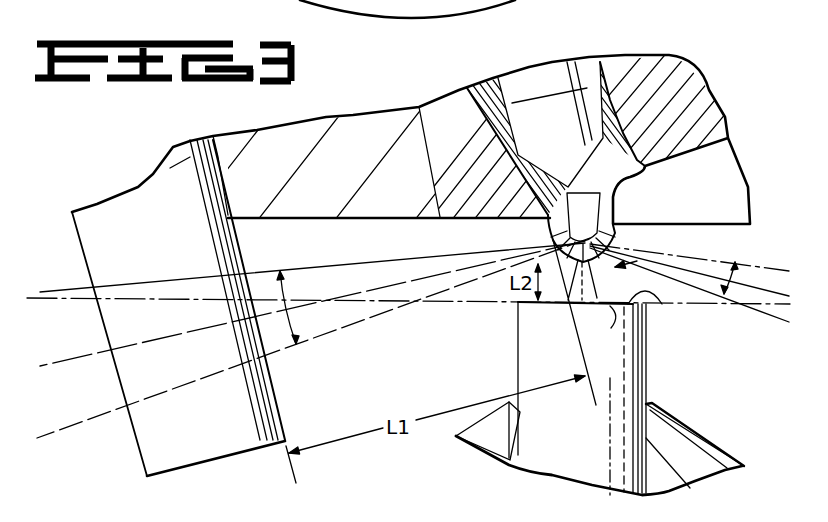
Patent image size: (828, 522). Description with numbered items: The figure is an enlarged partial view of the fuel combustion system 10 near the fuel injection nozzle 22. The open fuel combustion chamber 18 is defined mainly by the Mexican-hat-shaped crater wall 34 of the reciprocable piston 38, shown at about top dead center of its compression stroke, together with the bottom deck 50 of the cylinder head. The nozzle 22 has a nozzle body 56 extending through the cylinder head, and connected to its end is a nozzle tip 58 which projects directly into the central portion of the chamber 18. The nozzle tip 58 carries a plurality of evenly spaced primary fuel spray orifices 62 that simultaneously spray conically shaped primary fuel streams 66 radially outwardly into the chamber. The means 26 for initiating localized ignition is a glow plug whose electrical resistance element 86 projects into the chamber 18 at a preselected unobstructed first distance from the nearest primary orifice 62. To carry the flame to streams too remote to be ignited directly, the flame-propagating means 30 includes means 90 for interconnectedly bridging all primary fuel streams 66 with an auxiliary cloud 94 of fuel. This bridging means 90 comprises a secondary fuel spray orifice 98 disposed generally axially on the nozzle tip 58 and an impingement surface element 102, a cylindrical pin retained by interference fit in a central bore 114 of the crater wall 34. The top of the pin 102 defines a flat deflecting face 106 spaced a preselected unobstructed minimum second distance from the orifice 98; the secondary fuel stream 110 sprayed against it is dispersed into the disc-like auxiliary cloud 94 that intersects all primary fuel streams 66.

The fuel combustion system 10 is at (742, 93).
The fuel combustion chamber 18 is at (409, 370).
The fuel injection nozzle 22 is at (576, 40).
The means for initiating localized ignition and flaming of fuel 26 is at (65, 240).
The means for propagating the flame 30 is at (705, 250).
The crater wall 34 is at (707, 440).
The piston 38 is at (699, 418).
The bottom deck 50 is at (324, 125).
The nozzle body 56 is at (655, 65).
The nozzle tip 58 is at (618, 178).
The primary fuel spray orifices 62 is at (615, 217).
The primary fuel streams 66 is at (283, 300).
The electrical resistance element 86 is at (148, 436).
The means for interconnectedly bridging the primary fuel streams 90 is at (642, 284).
The auxiliary cloud of fuel 94 is at (429, 302).
The secondary fuel spray orifice 98 is at (597, 263).
The impingement surface element 102 is at (632, 358).
The deflecting face 106 is at (662, 304).
The secondary fuel stream 110 is at (606, 326).
The central bore 114 is at (523, 471).